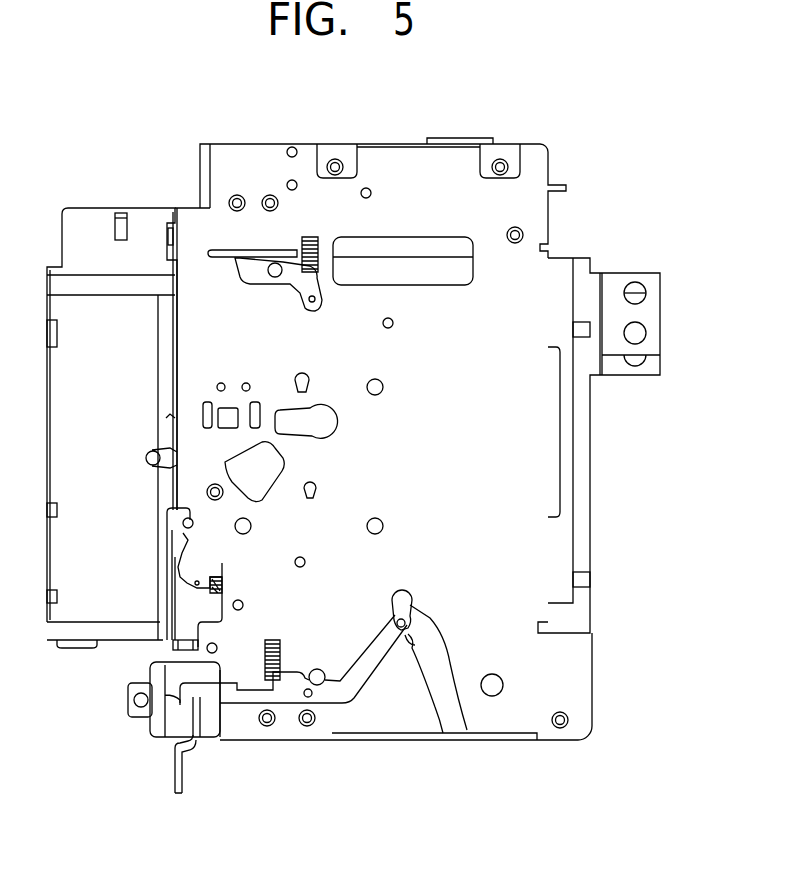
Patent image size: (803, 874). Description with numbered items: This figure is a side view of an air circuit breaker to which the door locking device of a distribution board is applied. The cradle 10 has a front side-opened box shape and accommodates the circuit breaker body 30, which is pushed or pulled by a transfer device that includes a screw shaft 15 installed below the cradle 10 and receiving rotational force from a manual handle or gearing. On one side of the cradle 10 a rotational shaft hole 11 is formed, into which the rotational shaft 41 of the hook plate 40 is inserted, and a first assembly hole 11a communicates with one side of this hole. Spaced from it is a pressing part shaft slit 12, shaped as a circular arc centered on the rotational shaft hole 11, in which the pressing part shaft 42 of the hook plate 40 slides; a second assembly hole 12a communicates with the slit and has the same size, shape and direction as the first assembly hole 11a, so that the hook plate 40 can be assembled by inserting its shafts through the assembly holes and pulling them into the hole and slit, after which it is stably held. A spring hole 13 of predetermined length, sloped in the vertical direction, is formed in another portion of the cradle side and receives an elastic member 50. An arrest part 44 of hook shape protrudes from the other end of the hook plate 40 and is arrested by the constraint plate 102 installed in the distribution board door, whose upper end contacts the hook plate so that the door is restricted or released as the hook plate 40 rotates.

The cradle 10 is at (528, 143).
The rotational shaft hole 11 is at (540, 215).
The first assembly hole 11a is at (320, 685).
The pressing part shaft slit 12 is at (430, 700).
The second assembly hole 12a is at (455, 690).
The spring hole 13 is at (265, 648).
The screw shaft 15 is at (128, 700).
The circuit breaker body 30 is at (85, 218).
The hook plate 40 is at (345, 698).
The rotational shaft 41 is at (306, 698).
The pressing part shaft 42 is at (402, 630).
The arrest part 44 is at (170, 722).
The elastic member 50 is at (266, 682).
The constraint plate 102 is at (180, 795).